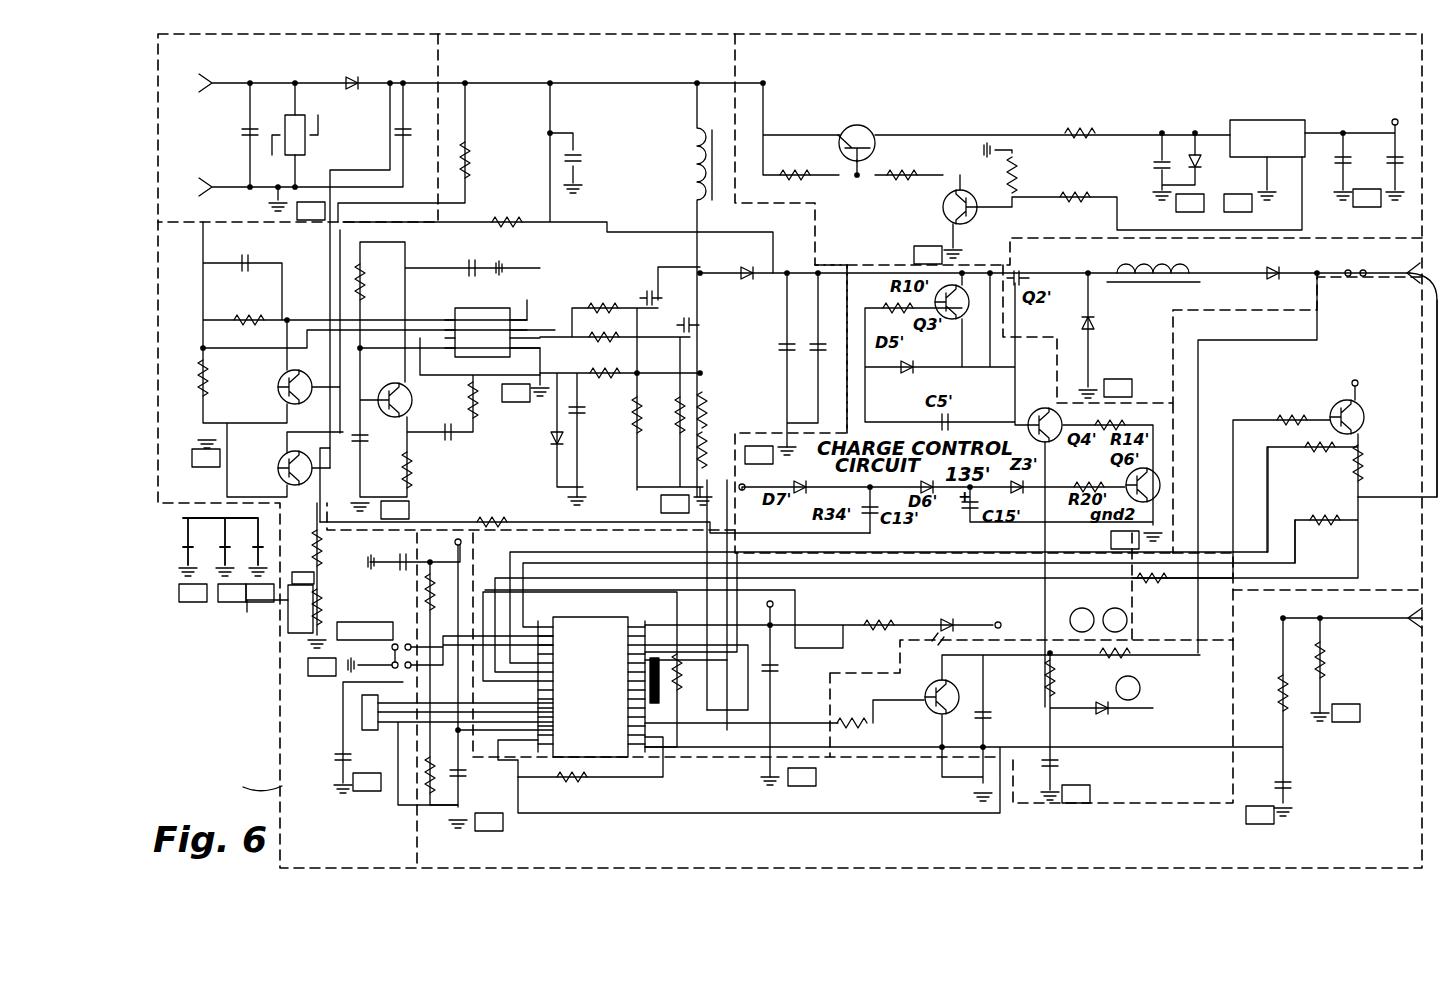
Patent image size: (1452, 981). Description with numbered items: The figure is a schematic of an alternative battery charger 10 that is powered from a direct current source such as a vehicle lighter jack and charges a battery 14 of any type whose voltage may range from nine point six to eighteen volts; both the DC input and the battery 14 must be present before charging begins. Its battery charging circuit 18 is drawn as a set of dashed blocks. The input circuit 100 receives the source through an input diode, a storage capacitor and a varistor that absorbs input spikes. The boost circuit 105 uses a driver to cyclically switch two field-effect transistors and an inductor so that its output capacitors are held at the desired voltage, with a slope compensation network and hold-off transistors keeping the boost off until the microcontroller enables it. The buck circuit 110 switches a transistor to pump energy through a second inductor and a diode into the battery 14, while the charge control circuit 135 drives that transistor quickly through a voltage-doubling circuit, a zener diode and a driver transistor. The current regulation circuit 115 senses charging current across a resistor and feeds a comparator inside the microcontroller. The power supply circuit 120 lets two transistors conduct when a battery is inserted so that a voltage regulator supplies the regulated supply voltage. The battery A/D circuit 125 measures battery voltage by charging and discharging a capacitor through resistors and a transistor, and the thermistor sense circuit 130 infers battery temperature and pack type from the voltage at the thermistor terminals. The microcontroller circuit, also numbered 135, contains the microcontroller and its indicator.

The input circuit 100 is at (460, 251).
The boost circuit 105 is at (786, 283).
The power supply circuit 120 is at (1240, 78).
The buck circuit 110 is at (1220, 446).
The thermistor sense circuit 130 is at (1297, 467).
The charge control circuit 135 is at (313, 833).
The battery A/D circuit 125 is at (1123, 721).
The current regulation circuit 115 is at (1314, 699).
The battery charger 10 is at (231, 629).
The battery charging circuit 18 is at (241, 675).
The battery 14 is at (1437, 375).